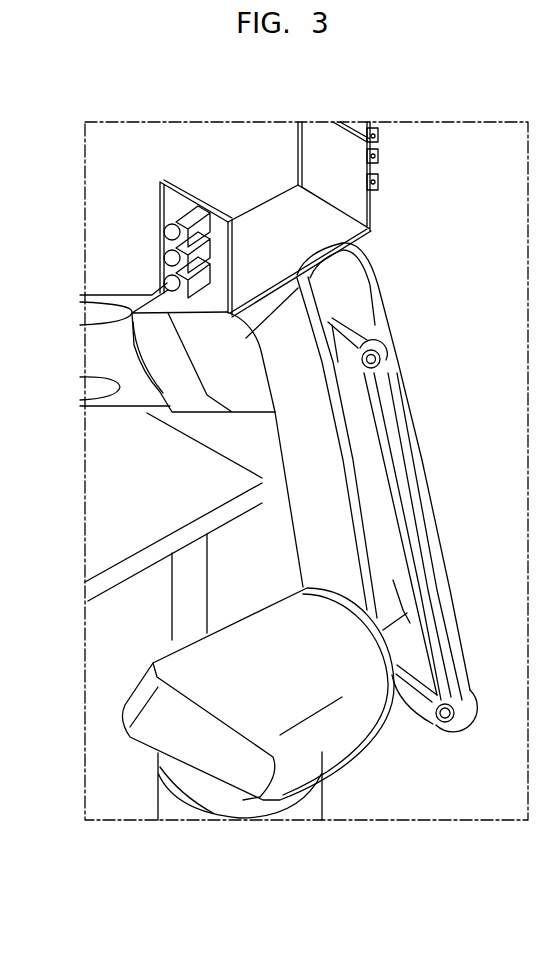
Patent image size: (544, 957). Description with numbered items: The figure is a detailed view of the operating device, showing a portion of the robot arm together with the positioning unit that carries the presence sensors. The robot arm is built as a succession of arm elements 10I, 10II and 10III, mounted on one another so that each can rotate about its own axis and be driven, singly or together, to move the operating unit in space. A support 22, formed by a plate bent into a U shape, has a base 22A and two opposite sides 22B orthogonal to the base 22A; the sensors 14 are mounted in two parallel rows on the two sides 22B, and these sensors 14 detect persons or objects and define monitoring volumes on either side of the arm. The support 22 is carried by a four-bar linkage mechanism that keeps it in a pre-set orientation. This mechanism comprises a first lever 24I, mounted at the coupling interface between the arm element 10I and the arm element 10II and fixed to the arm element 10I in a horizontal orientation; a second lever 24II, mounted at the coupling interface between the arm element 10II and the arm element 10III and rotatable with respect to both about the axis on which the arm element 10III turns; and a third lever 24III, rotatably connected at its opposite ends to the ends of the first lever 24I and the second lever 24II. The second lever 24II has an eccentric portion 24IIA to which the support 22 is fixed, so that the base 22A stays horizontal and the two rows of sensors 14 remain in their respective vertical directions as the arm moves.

The arm element 10I is at (138, 706).
The arm element 10II is at (440, 578).
The arm element 10III is at (240, 400).
The presence sensor 14 is at (164, 285).
The support 22 is at (300, 200).
The base 22A is at (306, 240).
The sides 22B is at (323, 146).
The first lever 24I is at (421, 693).
The second lever 24II is at (372, 341).
The eccentric portion 24IIA is at (307, 288).
The third lever 24III is at (405, 455).